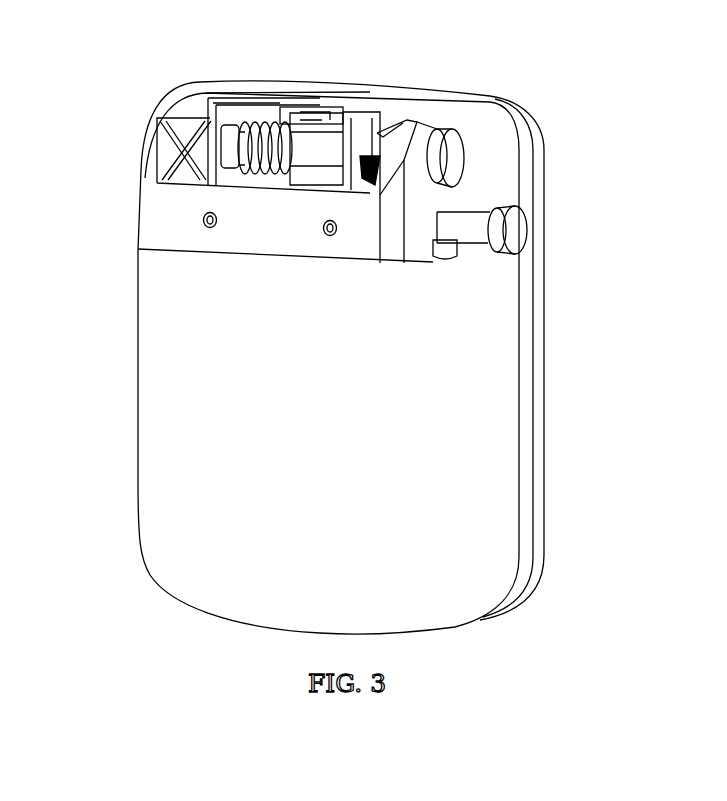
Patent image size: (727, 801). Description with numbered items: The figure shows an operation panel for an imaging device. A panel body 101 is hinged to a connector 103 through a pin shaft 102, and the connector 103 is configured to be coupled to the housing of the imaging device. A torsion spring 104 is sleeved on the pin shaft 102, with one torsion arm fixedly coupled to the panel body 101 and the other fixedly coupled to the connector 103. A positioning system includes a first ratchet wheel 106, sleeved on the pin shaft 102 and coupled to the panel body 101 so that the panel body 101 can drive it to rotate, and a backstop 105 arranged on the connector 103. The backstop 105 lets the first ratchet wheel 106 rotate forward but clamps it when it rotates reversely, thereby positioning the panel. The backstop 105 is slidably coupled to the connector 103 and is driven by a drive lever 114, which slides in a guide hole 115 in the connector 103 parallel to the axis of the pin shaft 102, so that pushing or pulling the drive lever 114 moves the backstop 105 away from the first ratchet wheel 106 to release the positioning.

The panel body 101 is at (183, 356).
The pin shaft 102 is at (452, 157).
The connector 103 is at (238, 232).
The torsion spring 104 is at (254, 125).
The backstop 105 is at (355, 160).
The first ratchet wheel 106 is at (382, 265).
The drive lever 114 is at (515, 237).
The guide hole 115 is at (440, 258).